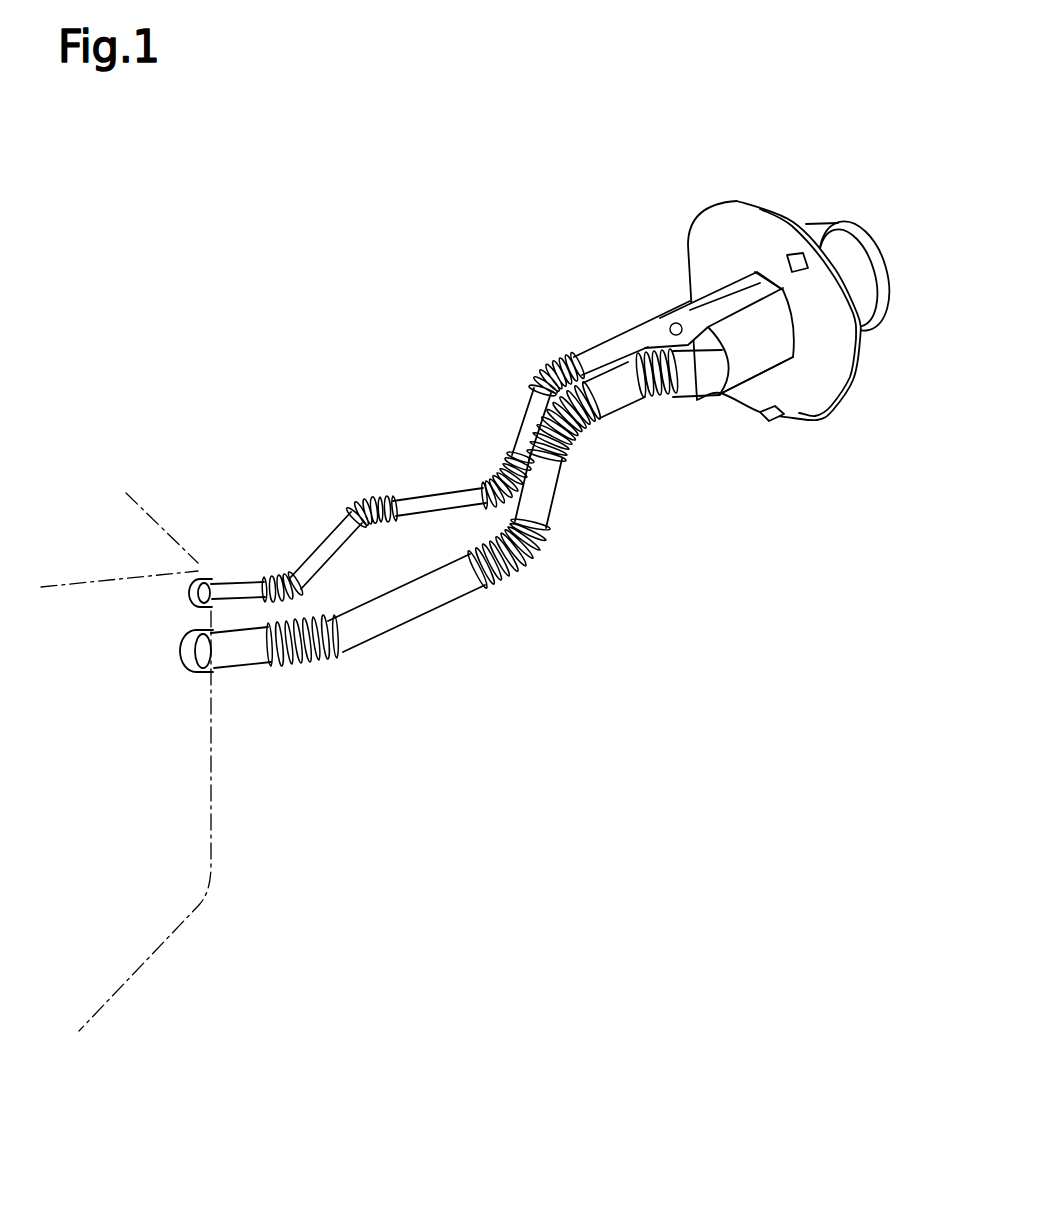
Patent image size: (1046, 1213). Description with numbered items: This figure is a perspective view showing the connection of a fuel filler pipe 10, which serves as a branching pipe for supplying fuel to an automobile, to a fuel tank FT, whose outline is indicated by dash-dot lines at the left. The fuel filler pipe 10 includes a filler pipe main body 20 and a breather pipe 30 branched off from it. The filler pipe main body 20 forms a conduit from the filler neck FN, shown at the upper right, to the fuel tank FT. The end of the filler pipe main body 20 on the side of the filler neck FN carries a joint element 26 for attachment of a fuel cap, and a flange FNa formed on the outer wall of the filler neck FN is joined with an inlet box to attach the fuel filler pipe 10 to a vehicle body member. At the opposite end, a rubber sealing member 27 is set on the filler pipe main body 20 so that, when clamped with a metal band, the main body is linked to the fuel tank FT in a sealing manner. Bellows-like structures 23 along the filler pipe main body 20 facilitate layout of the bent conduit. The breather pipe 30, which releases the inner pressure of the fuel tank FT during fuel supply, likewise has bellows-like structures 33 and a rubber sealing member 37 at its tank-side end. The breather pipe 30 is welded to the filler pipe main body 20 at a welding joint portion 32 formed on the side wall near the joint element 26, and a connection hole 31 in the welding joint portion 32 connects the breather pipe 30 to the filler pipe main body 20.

The fuel filler pipe 10 is at (597, 277).
The filler pipe main body 20 is at (409, 553).
The bellows-like structures 23 is at (537, 563).
The joint element 26 is at (785, 343).
The rubber sealing member 27 is at (190, 675).
The breather pipe 30 is at (439, 454).
The connection hole 31 is at (670, 321).
The welding joint portion 32 is at (713, 372).
The bellows-like structures 33 is at (365, 502).
The rubber sealing member 37 is at (205, 580).
The filler neck FN is at (830, 226).
The flange FNa is at (742, 230).
The fuel tank FT is at (225, 825).